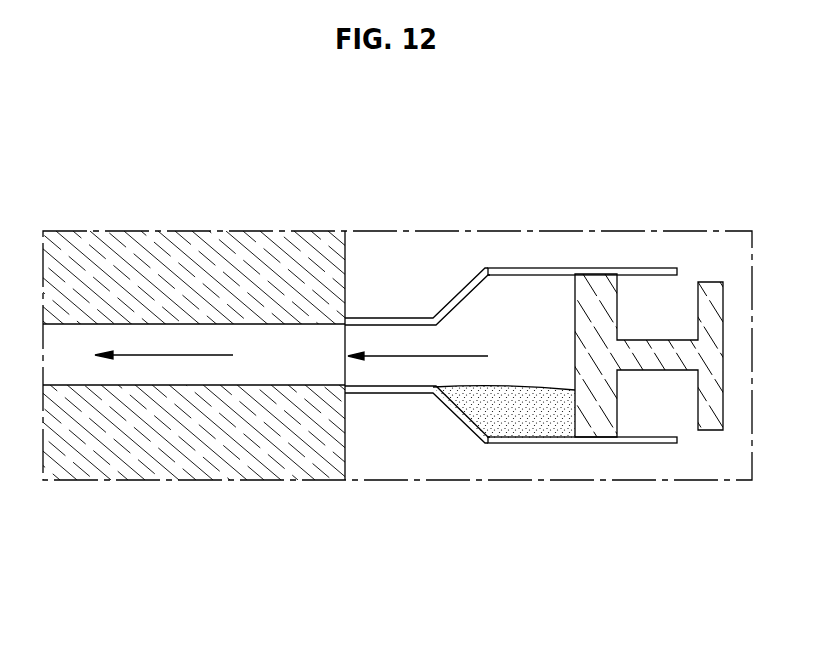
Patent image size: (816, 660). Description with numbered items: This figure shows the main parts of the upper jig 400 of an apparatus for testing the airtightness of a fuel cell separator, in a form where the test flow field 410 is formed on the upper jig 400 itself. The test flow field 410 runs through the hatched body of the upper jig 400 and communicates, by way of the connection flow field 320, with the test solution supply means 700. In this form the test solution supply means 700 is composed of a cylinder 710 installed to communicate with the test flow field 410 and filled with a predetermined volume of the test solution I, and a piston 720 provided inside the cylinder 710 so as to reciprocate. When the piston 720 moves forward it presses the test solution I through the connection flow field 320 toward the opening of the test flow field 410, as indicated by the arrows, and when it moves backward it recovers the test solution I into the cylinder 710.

The connection flow field 320 is at (378, 317).
The upper jig 400 is at (244, 262).
The test flow field 410 is at (73, 347).
The test solution I is at (521, 410).
The test solution supply means 700 is at (624, 376).
The cylinder 710 is at (513, 441).
The piston 720 is at (593, 401).